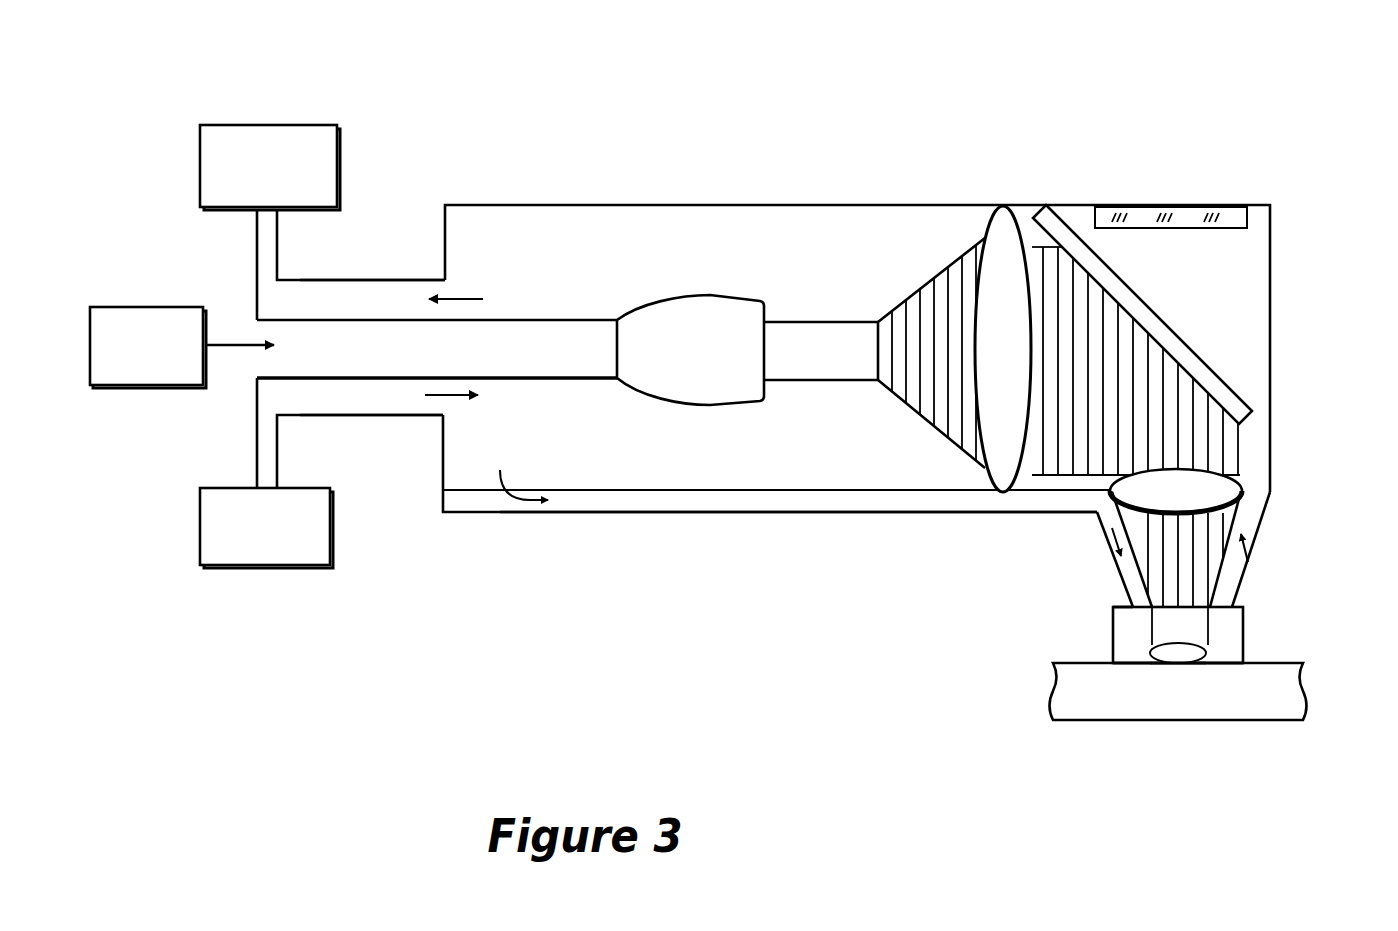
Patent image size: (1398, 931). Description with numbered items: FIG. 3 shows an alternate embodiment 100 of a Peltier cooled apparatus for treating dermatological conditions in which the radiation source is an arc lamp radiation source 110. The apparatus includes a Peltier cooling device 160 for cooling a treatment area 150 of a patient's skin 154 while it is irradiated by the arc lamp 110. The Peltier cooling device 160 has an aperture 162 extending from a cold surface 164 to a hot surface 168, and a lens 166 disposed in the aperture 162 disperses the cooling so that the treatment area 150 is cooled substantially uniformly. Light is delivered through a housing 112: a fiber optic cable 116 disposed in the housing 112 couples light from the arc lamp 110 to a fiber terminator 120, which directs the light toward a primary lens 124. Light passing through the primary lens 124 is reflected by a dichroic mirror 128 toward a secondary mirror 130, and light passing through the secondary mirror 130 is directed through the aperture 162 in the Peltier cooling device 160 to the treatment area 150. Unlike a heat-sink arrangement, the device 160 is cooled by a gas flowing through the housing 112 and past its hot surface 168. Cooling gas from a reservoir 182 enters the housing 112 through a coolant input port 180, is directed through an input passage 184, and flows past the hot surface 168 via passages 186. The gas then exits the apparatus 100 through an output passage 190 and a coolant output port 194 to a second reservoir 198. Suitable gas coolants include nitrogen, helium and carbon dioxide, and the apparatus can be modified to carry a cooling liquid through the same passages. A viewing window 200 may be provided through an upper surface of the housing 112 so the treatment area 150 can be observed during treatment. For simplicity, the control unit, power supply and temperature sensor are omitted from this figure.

The alternate embodiment 100 is at (566, 144).
The arc lamp radiation source 110 is at (118, 307).
The housing 112 is at (733, 205).
The fiber optic cable 116 is at (437, 347).
The fiber terminator 120 is at (747, 350).
The primary lens 124 is at (1003, 233).
The dichroic mirror 128 is at (1148, 312).
The secondary mirror 130 is at (1222, 489).
The treatment area 150 is at (1178, 663).
The patient's skin 154 is at (1303, 690).
The Peltier cooling device 160 is at (1250, 631).
The aperture 162 is at (1190, 627).
The cold surface 164 is at (1128, 667).
The lens 166 is at (1176, 653).
The hot surface 168 is at (1130, 603).
The coolant input port 180 is at (275, 395).
The reservoir 182 is at (266, 528).
The input passage 184 is at (370, 395).
The passages 186 is at (1105, 540).
The output passage 190 is at (385, 290).
The coolant output port 194 is at (277, 298).
The reservoir 198 is at (270, 167).
The viewing window 200 is at (1190, 205).